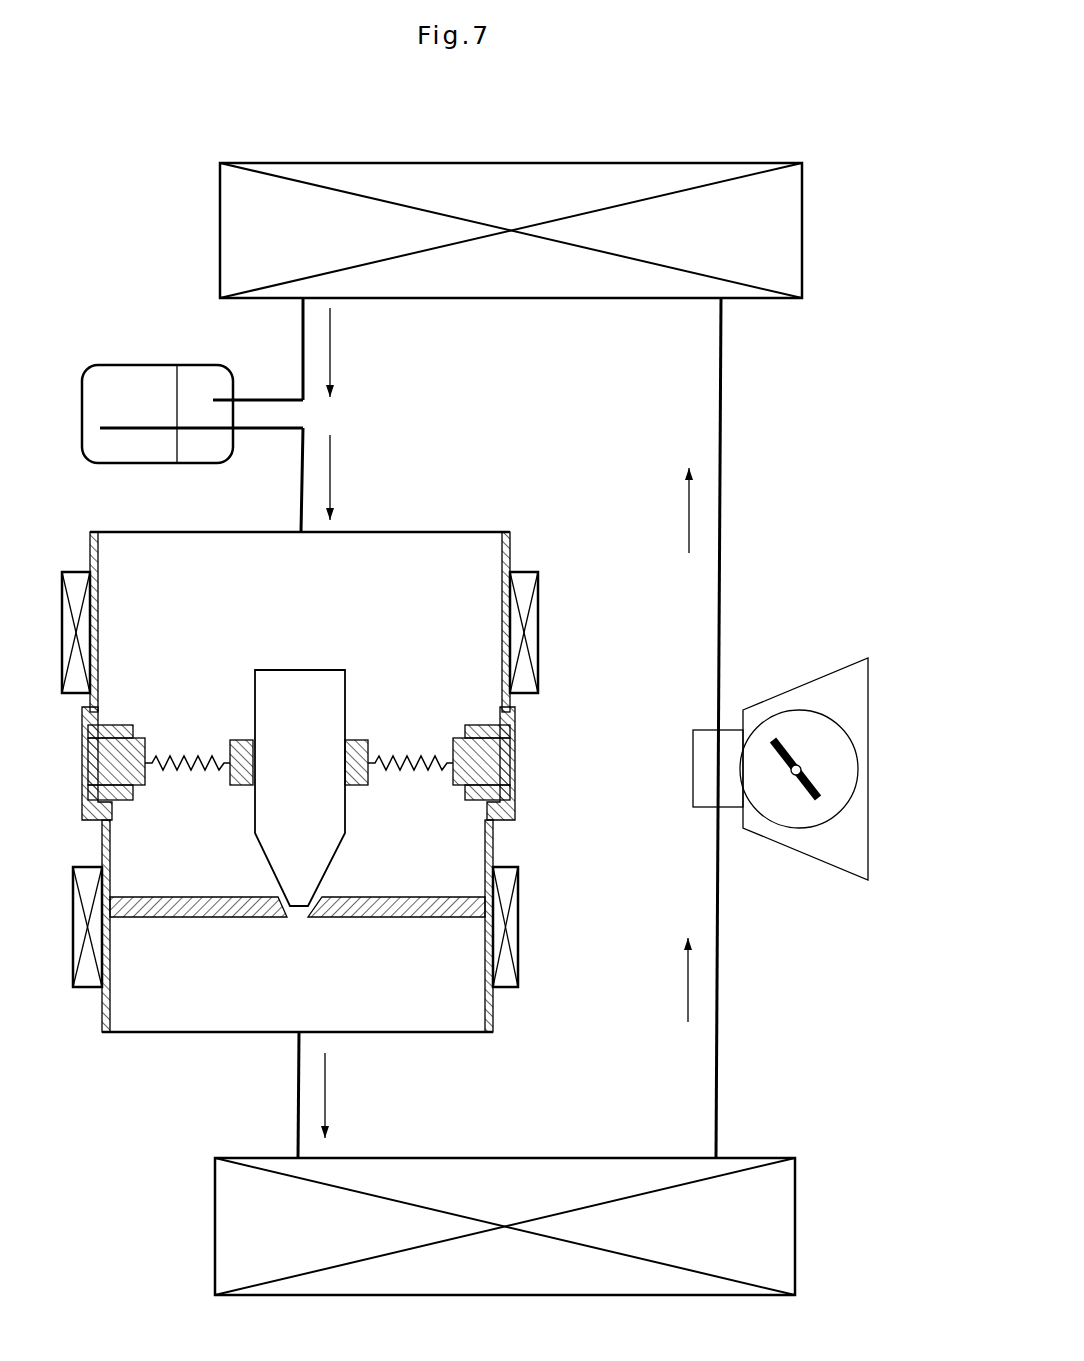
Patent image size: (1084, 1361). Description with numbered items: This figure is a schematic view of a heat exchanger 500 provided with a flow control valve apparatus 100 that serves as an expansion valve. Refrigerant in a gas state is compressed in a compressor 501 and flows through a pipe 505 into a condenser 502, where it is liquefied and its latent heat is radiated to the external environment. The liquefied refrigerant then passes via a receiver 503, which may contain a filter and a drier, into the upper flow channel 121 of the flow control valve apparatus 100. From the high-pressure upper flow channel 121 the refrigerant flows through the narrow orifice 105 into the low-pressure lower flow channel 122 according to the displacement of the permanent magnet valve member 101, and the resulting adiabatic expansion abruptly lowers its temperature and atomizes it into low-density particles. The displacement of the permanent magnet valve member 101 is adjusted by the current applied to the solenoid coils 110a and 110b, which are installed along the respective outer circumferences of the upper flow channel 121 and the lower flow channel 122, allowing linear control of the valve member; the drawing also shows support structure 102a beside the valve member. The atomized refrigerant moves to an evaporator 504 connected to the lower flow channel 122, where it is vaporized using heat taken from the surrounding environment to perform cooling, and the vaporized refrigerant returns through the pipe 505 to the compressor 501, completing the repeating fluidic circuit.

The flow control valve apparatus 100 is at (347, 756).
The permanent magnet valve member 101 is at (272, 692).
The spring support member 102a is at (183, 770).
The orifice 105 is at (297, 915).
The solenoid coil 110a is at (530, 635).
The solenoid coil 110b is at (512, 928).
The upper flow channel 121 is at (417, 562).
The lower flow channel 122 is at (440, 1030).
The heat exchanger 500 is at (812, 372).
The compressor 501 is at (832, 670).
The condenser 502 is at (802, 232).
The receiver 503 is at (158, 364).
The evaporator 504 is at (215, 1225).
The pipe 505 is at (720, 438).